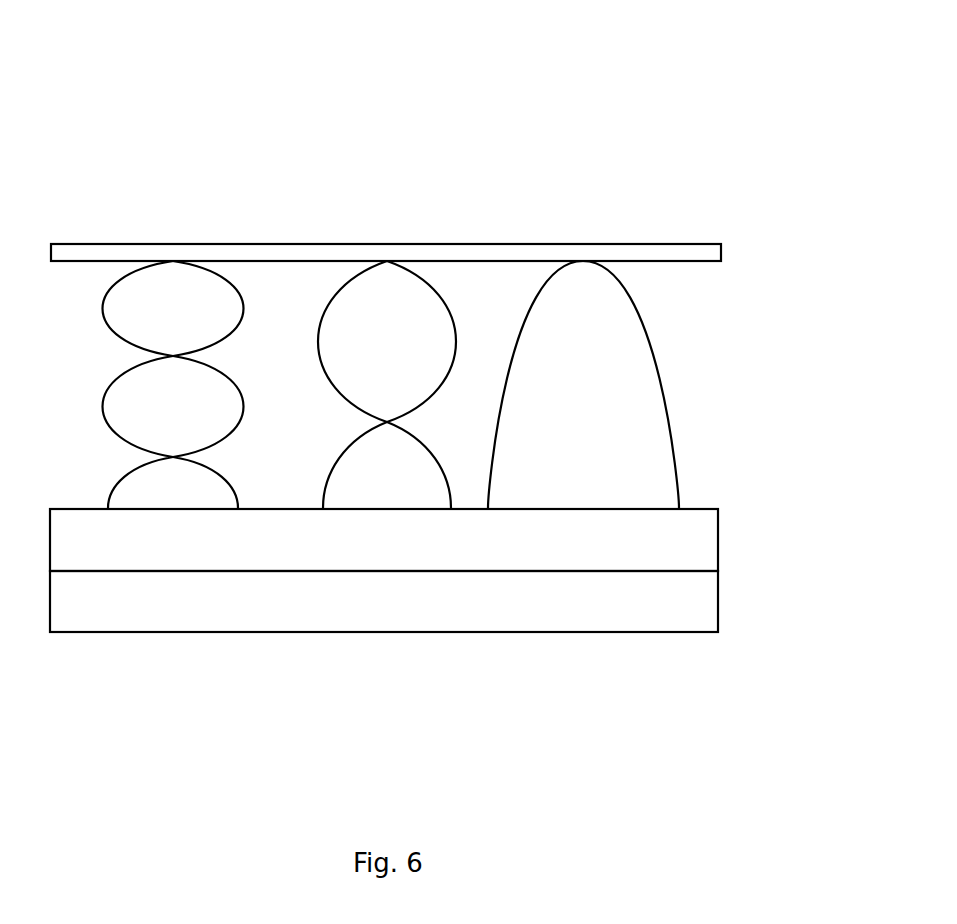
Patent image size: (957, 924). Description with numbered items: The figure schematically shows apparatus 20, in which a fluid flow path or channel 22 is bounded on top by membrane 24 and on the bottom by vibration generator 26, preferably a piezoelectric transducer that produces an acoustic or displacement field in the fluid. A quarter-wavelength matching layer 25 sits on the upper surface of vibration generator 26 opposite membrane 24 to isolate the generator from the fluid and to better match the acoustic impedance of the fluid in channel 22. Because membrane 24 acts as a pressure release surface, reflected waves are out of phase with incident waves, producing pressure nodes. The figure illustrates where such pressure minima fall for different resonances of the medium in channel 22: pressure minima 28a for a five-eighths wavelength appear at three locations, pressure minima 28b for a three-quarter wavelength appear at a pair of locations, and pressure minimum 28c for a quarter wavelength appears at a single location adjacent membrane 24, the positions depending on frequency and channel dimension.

The apparatus 20 is at (127, 137).
The fluid flow path or channel 22 is at (705, 370).
The membrane 24 is at (478, 255).
The matching layer 25 is at (115, 552).
The vibration generator 26 is at (225, 602).
The pressure minima 28a is at (168, 263).
The pressure minima 28b is at (408, 267).
The pressure minima 28c is at (598, 268).